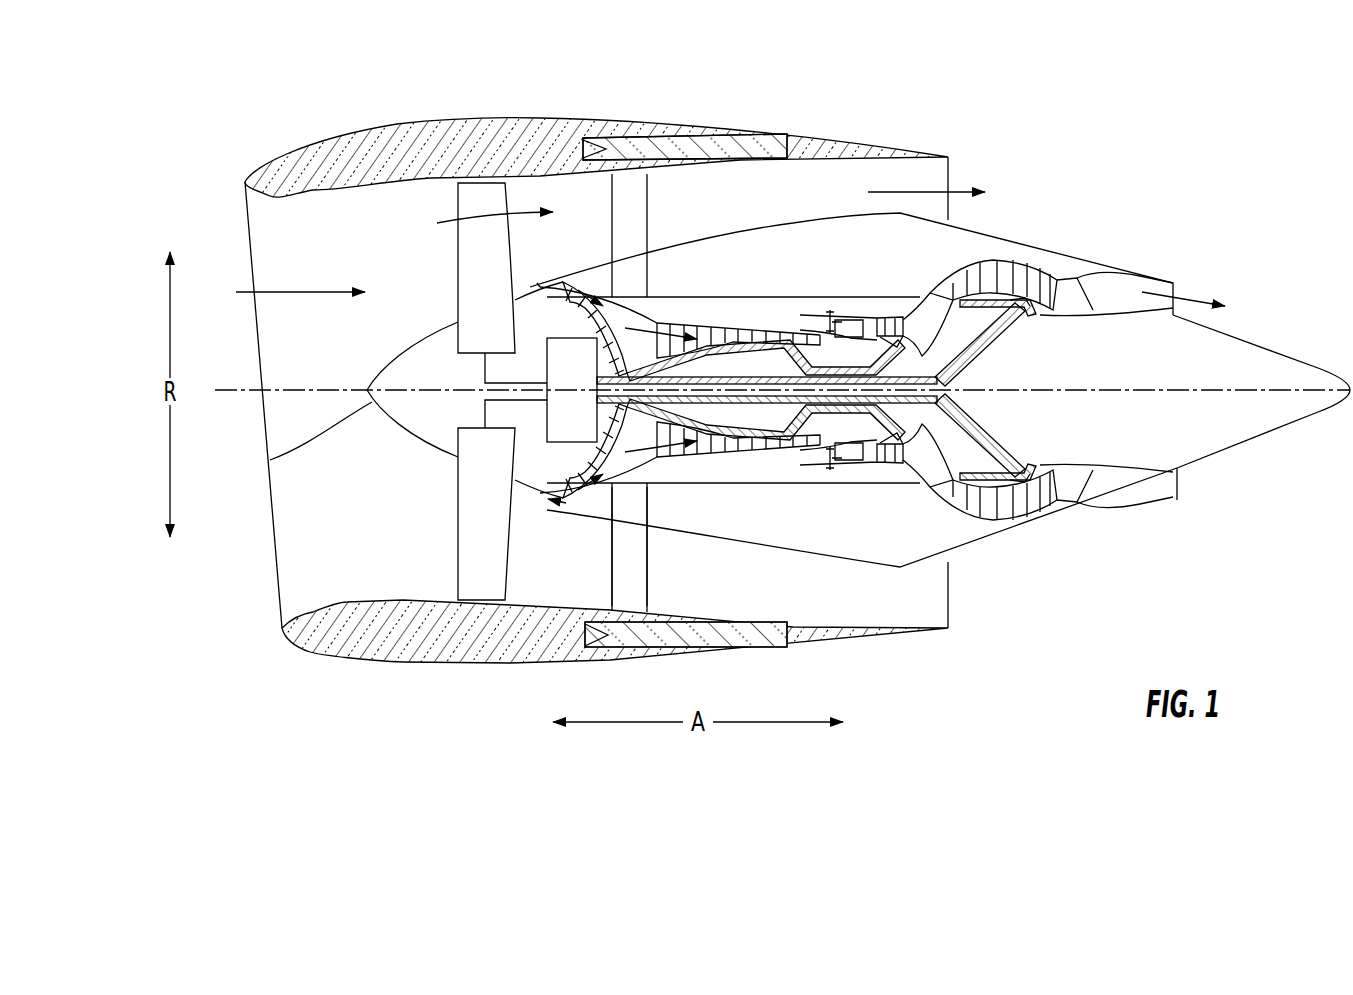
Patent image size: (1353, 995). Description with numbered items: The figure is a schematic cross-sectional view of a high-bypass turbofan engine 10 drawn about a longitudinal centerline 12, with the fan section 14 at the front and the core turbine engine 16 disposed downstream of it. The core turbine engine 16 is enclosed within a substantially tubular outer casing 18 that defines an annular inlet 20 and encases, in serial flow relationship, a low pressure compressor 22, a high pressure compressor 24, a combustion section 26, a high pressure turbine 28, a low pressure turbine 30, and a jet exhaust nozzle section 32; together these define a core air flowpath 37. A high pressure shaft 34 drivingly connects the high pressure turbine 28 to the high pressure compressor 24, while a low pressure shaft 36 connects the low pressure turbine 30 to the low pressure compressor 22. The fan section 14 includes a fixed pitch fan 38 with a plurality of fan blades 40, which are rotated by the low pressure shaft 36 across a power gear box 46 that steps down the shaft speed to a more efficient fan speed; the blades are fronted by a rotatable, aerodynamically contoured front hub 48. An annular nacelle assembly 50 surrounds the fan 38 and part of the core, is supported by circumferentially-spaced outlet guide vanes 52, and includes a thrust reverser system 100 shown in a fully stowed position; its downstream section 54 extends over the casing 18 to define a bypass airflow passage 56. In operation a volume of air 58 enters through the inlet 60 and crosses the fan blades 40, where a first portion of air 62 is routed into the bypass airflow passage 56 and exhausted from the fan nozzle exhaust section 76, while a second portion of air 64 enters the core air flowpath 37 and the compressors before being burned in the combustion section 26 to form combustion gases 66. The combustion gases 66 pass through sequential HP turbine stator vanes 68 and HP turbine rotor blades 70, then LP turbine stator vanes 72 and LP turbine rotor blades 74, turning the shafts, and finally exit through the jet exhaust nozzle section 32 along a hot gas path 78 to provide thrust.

The turbofan engine 10 is at (1093, 130).
The thrust reverser system 100 is at (705, 118).
The longitudinal centerline 12 is at (1117, 377).
The fan section 14 is at (430, 338).
The core turbine engine 16 is at (773, 270).
The outer casing 18 is at (807, 553).
The annular inlet 20 is at (520, 512).
The low pressure compressor 22 is at (603, 453).
The high pressure compressor 24 is at (677, 450).
The combustion section 26 is at (848, 457).
The high pressure turbine 28 is at (987, 458).
The low pressure turbine 30 is at (1033, 517).
The jet exhaust nozzle section 32 is at (1093, 500).
The high pressure shaft 34 is at (850, 360).
The low pressure shaft 36 is at (977, 355).
The core air flowpath 37 is at (633, 450).
The fixed pitch fan 38 is at (420, 447).
The fan blades 40 is at (457, 543).
The power gear box 46 is at (582, 357).
The front hub 48 is at (270, 460).
The nacelle assembly 50 is at (503, 677).
The outlet guide vanes 52 is at (648, 205).
The downstream section 54 is at (893, 143).
The bypass airflow passage 56 is at (801, 204).
The volume of air 58 is at (298, 290).
The inlet 60 is at (275, 607).
The first portion of air 62 is at (473, 220).
The second portion of air 64 is at (537, 283).
The combustion gases 66 is at (990, 273).
The HP turbine stator vanes 68 is at (880, 453).
The HP turbine rotor blades 70 is at (905, 440).
The LP turbine stator vanes 72 is at (953, 505).
The LP turbine rotor blades 74 is at (967, 507).
The fan nozzle exhaust section 76 is at (937, 178).
The hot gas path 78 is at (927, 293).